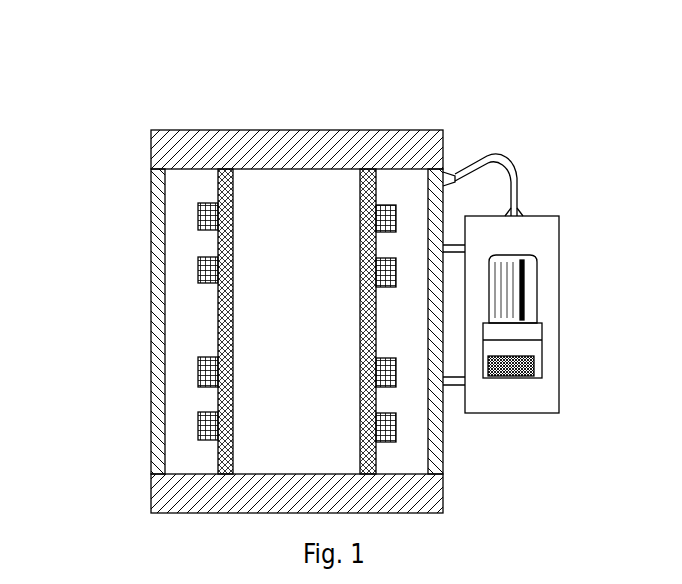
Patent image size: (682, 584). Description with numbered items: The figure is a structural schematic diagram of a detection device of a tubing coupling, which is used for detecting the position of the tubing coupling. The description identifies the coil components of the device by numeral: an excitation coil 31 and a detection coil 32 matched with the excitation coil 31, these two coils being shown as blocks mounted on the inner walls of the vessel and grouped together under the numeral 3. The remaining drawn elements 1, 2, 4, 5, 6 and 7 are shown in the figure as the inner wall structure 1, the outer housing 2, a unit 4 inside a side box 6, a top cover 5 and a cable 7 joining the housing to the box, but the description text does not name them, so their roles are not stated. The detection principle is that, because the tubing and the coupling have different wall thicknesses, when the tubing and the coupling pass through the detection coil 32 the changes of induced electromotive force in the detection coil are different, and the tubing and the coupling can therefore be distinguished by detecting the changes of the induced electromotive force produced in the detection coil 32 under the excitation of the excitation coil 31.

The inner container 1 is at (232, 458).
The outer housing 2 is at (157, 460).
The electrode assembly 3 is at (211, 273).
The excitation coil 31 is at (198, 217).
The detection coil 32 is at (198, 282).
The drive unit 4 is at (522, 347).
The lid 5 is at (207, 135).
The control box 6 is at (553, 250).
The cable 7 is at (497, 155).